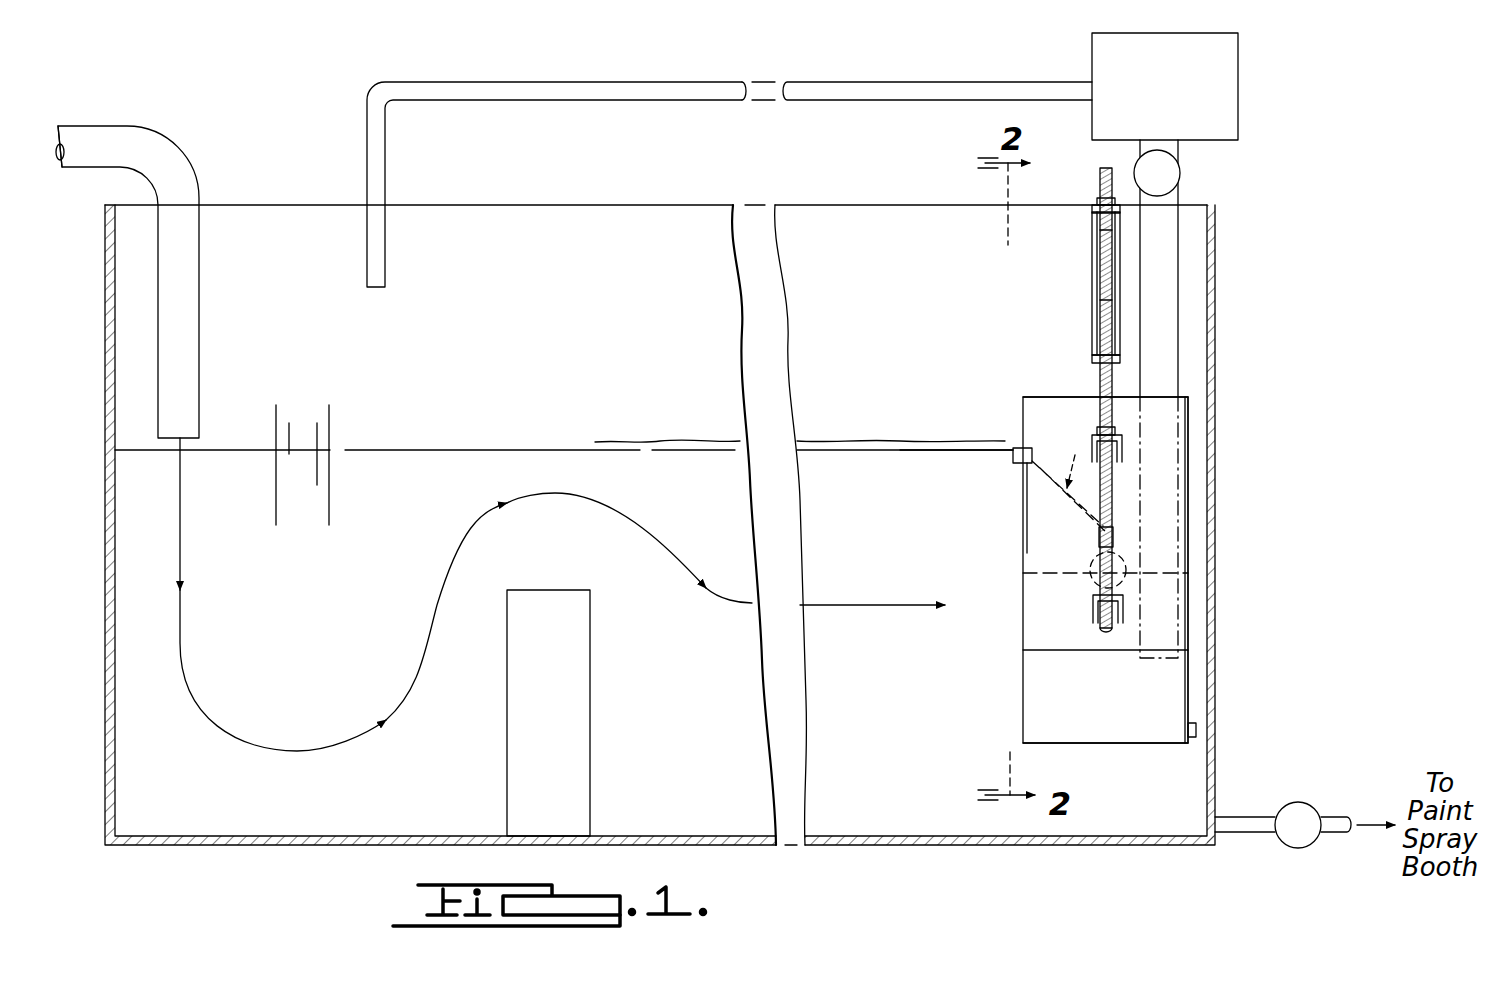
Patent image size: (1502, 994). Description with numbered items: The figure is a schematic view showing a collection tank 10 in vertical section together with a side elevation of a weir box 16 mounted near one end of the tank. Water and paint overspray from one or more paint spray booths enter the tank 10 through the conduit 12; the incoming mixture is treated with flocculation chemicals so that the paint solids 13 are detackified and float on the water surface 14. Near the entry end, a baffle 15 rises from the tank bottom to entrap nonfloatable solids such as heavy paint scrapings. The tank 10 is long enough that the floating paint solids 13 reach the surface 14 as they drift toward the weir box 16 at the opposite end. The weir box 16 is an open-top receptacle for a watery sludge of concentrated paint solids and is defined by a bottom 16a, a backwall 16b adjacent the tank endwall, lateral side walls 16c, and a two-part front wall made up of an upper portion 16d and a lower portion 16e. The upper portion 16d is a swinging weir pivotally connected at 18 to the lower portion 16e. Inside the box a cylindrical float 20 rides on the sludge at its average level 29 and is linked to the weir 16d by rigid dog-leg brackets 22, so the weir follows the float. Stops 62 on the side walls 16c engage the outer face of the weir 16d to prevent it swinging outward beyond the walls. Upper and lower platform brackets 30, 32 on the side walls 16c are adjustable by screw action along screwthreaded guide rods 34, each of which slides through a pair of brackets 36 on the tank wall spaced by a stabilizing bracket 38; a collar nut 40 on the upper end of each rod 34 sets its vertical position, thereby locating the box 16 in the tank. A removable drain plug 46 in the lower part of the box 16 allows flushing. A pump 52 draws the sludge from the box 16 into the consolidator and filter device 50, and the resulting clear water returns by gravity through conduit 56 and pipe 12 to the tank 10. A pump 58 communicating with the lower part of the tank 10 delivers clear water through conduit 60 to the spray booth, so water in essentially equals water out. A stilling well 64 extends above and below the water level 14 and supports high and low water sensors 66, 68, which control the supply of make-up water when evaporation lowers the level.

The collection tank 10 is at (105, 475).
The conduit 12 is at (200, 328).
The paint solids 13 is at (828, 440).
The water surface 14 is at (935, 447).
The baffle 15 is at (579, 707).
The weir box 16 is at (1043, 378).
The bottom 16a is at (1125, 743).
The backwall 16b is at (1190, 488).
The lateral side walls 16c is at (1038, 422).
The upper front wall portion 16d is at (1023, 513).
The lower front wall portion 16e is at (1023, 642).
The pivot 18 is at (1050, 565).
The cylindrical float 20 is at (1085, 580).
The dog-leg brackets 22 is at (1058, 459).
The sludge level 29 is at (1160, 572).
The upper platform bracket 30 is at (1122, 452).
The lower platform bracket 32 is at (1125, 615).
The screwthreaded guide rod 34 is at (1100, 255).
The brackets 36 is at (1092, 210).
The stabilizing bracket 38 is at (1092, 282).
The collar nut 40 is at (1098, 193).
The drain plug 46 is at (1196, 730).
The consolidator and filter device 50 is at (1238, 48).
The pump 52 is at (1180, 173).
The conduit 56 is at (590, 90).
The pump 58 is at (1291, 847).
The conduit 60 is at (1334, 815).
The stops 62 is at (1013, 455).
The stilling well 64 is at (330, 497).
The high water sensor 66 is at (289, 437).
The low water sensor 68 is at (330, 437).